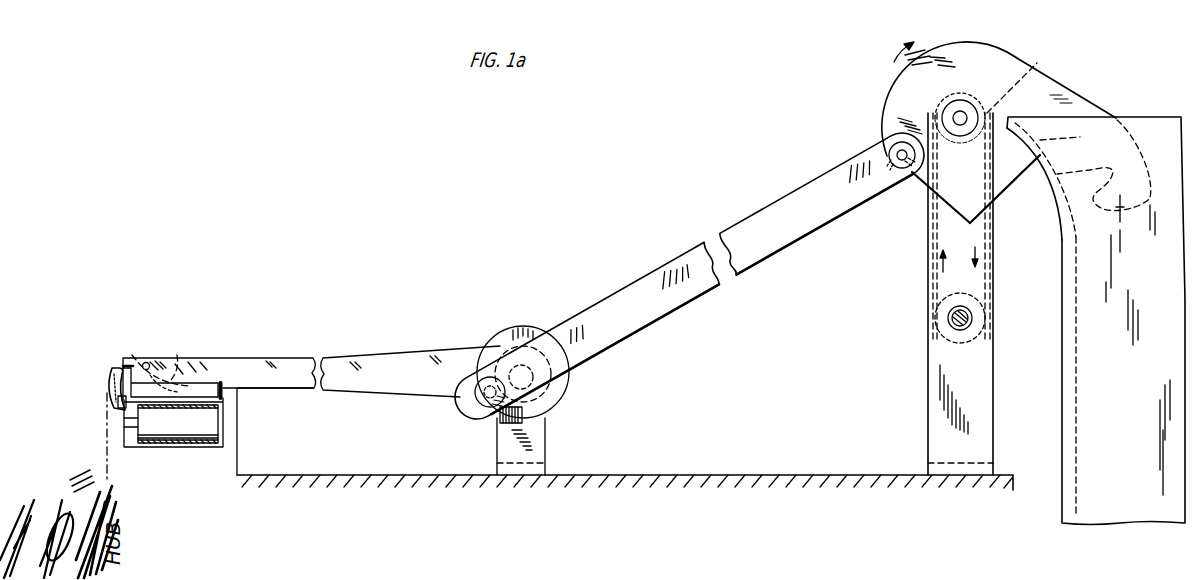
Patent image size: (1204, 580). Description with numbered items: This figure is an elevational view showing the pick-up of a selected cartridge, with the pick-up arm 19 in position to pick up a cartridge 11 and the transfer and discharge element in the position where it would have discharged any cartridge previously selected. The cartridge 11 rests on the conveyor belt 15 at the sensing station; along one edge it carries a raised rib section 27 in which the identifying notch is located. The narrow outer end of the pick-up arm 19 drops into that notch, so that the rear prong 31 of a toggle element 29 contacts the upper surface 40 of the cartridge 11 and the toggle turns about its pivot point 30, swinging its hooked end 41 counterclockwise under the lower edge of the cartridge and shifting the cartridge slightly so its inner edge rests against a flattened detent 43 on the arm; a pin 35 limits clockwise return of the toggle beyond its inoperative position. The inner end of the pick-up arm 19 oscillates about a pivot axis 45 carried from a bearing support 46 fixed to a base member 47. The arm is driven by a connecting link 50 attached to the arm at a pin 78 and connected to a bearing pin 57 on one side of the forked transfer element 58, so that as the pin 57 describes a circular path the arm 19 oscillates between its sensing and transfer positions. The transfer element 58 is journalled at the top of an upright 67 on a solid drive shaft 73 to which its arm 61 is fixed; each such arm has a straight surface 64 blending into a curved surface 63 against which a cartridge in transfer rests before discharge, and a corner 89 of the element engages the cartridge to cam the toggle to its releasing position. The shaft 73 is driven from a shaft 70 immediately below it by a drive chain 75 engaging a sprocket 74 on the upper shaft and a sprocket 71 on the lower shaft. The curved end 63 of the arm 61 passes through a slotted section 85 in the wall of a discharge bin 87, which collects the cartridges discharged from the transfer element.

The cartridge element 11 is at (228, 400).
The conveyor belt drive 15 is at (124, 418).
The pick-up arm 19 is at (246, 358).
The raised rib section 27 is at (210, 380).
The toggle element 29 is at (118, 367).
The pivot point 30 is at (147, 362).
The rear prong 31 is at (177, 354).
The pin 35 is at (132, 354).
The upper surface 40 is at (190, 400).
The hooked end 41 is at (117, 401).
The flattened detent 43 is at (226, 402).
The pivot axis 45 is at (568, 378).
The bearing support 46 is at (546, 438).
The base member 47 is at (440, 477).
The connecting link 50 is at (671, 312).
The bearing pin 57 is at (903, 164).
The forked transfer element 58 is at (893, 72).
The arm 61 is at (1058, 90).
The curved surface 63 is at (1048, 178).
The straight surface 64 is at (1008, 188).
The upright 67 is at (928, 373).
The shaft 70 is at (975, 316).
The sprocket 71 is at (946, 318).
The solid drive shaft 73 is at (961, 115).
The sprocket 74 is at (1040, 61).
The drive chain 75 is at (931, 250).
The pin 78 is at (489, 377).
The slotted section 85 is at (1098, 245).
The discharge bin 87 is at (1062, 375).
The corner 89 is at (968, 227).